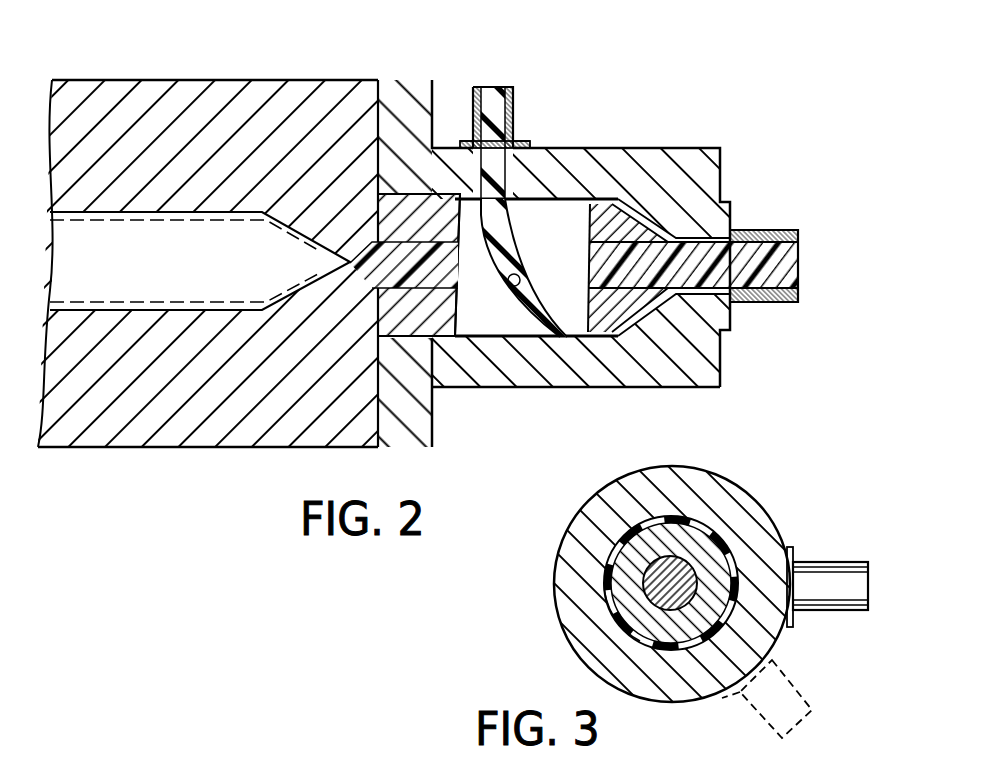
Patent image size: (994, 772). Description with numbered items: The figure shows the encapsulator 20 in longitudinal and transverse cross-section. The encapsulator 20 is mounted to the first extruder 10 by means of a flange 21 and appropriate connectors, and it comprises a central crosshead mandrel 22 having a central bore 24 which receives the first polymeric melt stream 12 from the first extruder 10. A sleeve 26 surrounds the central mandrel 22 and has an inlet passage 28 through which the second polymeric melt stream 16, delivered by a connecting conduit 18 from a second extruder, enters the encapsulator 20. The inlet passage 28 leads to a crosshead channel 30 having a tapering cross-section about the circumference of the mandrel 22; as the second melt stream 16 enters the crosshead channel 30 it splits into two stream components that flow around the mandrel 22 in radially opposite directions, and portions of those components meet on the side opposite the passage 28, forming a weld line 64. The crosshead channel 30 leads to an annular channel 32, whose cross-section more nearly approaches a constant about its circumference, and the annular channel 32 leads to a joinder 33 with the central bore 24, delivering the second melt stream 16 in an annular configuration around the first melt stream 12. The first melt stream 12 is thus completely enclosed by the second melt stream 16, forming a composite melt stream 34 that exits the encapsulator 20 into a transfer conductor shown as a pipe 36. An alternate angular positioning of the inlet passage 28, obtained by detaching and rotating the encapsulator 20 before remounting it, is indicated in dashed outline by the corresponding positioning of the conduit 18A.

In FIG. 2, the first extruder 10 is at (142, 76).
In FIG. 2, the first polymeric melt stream 12 is at (359, 266).
In FIG. 3, the first polymeric melt stream 12 is at (780, 634).
In FIG. 2, the second polymeric melt stream 16 is at (497, 126).
In FIG. 3, the second polymeric melt stream 16 is at (733, 563).
In FIG. 2, the connecting conduit 18 is at (511, 99).
In FIG. 3, the connecting conduit 18 is at (847, 562).
In FIG. 3, the conduit in alternate positioning 18A is at (757, 718).
In FIG. 2, the encapsulator 20 is at (604, 145).
In FIG. 2, the flange 21 is at (437, 420).
In FIG. 2, the central crosshead mandrel 22 is at (536, 265).
In FIG. 3, the central crosshead mandrel 22 is at (695, 550).
In FIG. 2, the central bore 24 is at (612, 290).
In FIG. 3, the central bore 24 is at (607, 598).
In FIG. 2, the sleeve 26 is at (504, 388).
In FIG. 3, the sleeve 26 is at (720, 470).
In FIG. 2, the inlet passage 28 is at (496, 235).
In FIG. 2, the crosshead channel 30 is at (508, 282).
In FIG. 2, the annular channel 32 is at (647, 200).
In FIG. 2, the joinder 33 is at (722, 362).
In FIG. 2, the composite melt stream 34 is at (744, 230).
In FIG. 2, the pipe 36 is at (780, 304).
In FIG. 3, the weld line 64 is at (612, 572).